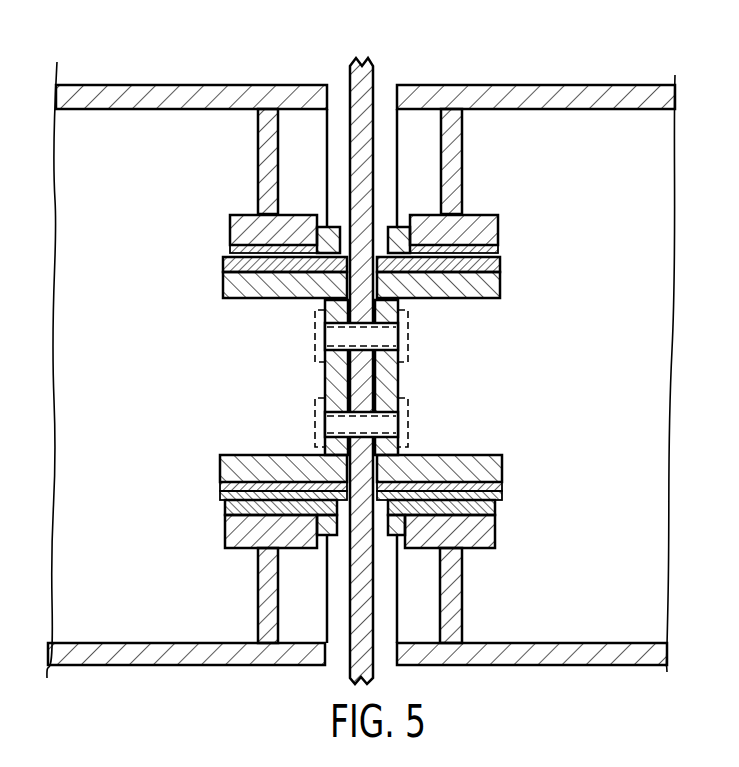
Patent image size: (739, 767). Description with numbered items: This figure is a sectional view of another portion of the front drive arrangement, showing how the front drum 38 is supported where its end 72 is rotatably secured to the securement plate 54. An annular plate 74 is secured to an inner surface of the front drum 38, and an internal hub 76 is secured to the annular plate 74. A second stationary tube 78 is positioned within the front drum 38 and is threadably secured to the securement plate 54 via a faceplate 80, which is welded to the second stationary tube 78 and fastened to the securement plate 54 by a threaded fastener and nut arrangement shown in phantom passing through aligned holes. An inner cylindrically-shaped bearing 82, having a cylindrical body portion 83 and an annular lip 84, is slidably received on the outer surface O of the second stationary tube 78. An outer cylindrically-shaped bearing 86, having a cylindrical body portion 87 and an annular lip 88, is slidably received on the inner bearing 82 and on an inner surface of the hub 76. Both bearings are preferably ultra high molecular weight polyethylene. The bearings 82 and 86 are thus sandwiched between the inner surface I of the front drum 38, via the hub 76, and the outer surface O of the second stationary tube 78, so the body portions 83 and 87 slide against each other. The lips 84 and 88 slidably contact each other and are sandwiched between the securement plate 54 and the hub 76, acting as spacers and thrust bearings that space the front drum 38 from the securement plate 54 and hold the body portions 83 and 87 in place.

The front drum 38 is at (100, 86).
The end of front drum 72 is at (238, 86).
The securement plate 54 is at (373, 72).
The annular plate 74 is at (258, 190).
The internal hub 76 is at (230, 216).
The inner surface of front drum I is at (222, 258).
The outer surface of second stationary tube O is at (224, 272).
The second stationary tube 78 is at (364, 303).
The faceplate 80 is at (325, 385).
The inner cylindrically-shaped bearing 82 is at (220, 490).
The cylindrical body portion 83 is at (240, 456).
The annular lip 84 is at (312, 482).
The outer cylindrically-shaped bearing 86 is at (226, 515).
The cylindrical body portion 87 is at (246, 548).
The annular lip 88 is at (310, 548).